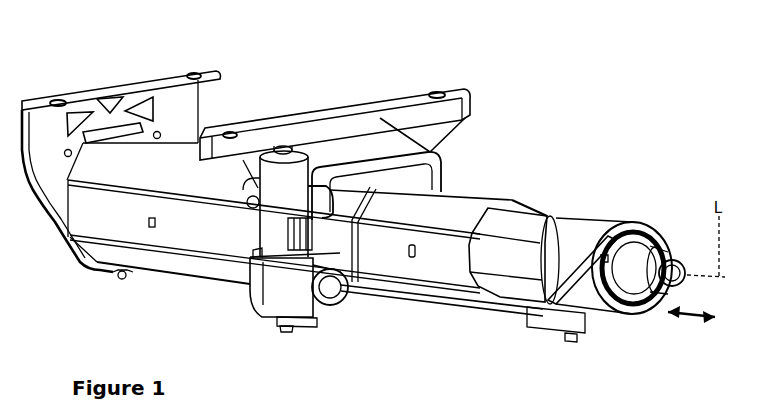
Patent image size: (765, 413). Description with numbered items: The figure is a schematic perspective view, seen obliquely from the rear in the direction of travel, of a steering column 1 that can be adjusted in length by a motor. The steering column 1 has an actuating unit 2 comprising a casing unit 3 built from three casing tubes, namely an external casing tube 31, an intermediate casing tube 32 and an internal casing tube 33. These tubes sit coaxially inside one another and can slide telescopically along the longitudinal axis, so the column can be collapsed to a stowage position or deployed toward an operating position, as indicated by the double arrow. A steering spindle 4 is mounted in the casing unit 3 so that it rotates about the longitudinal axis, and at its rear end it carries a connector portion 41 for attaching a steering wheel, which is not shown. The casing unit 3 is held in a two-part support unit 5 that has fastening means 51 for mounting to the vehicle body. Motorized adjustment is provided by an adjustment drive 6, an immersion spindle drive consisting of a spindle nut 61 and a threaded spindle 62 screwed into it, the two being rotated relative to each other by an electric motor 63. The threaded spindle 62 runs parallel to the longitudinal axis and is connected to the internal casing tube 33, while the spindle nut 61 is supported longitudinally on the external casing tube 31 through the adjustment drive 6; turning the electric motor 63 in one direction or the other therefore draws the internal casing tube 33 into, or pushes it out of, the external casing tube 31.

The steering column 1 is at (418, 55).
The actuating unit 2 is at (557, 172).
The casing unit 3 is at (183, 286).
The external casing tube 31 is at (163, 237).
The intermediate casing tube 32 is at (447, 210).
The internal casing tube 33 is at (529, 230).
The steering spindle 4 is at (645, 226).
The connector portion 41 is at (667, 240).
The support unit 5 is at (185, 117).
The fastening means 51 is at (194, 70).
The adjustment drive 6 is at (258, 328).
The spindle nut 61 is at (325, 312).
The threaded spindle 62 is at (388, 297).
The electric motor 63 is at (277, 212).